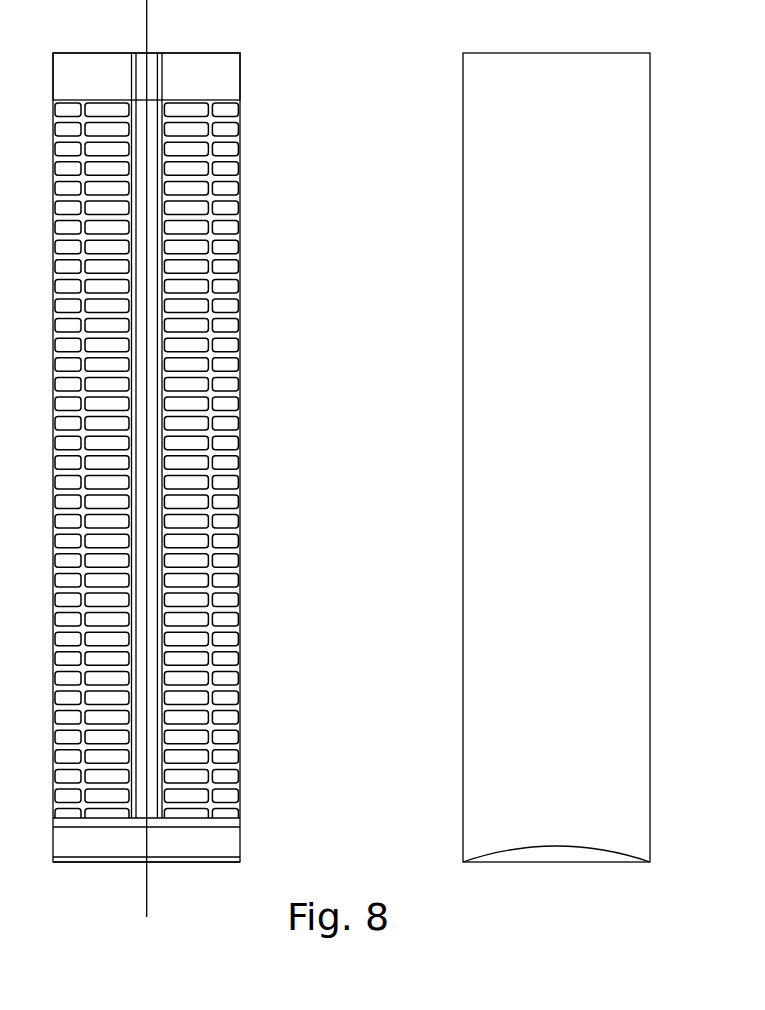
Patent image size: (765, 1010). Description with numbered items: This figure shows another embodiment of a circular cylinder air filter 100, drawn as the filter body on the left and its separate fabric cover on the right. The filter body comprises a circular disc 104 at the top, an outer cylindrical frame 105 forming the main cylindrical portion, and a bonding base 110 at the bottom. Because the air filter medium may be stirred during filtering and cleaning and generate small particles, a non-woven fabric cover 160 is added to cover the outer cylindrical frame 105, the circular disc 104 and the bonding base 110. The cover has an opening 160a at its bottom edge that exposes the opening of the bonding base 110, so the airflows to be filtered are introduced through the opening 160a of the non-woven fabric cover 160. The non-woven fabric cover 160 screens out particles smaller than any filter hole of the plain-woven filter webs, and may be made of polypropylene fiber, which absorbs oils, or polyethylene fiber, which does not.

The circular cylinder air filter 100 is at (205, 46).
The circular disc 104 is at (80, 68).
The outer cylindrical frame 105 is at (241, 481).
The bonding base 110 is at (225, 840).
The non-woven fabric cover 160 is at (633, 298).
The opening of the non-woven fabric cover 160a is at (556, 855).